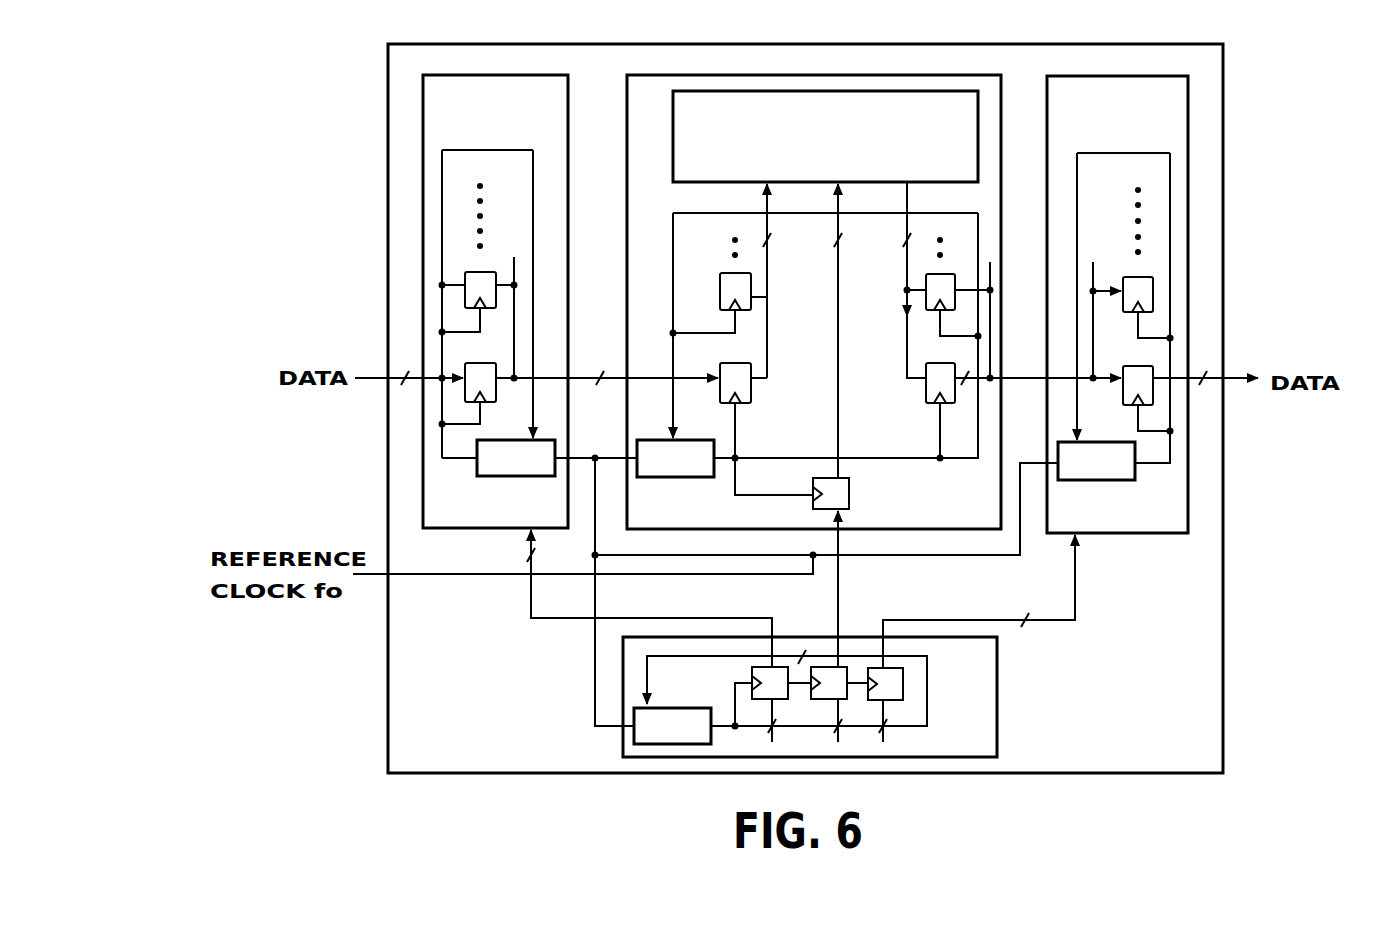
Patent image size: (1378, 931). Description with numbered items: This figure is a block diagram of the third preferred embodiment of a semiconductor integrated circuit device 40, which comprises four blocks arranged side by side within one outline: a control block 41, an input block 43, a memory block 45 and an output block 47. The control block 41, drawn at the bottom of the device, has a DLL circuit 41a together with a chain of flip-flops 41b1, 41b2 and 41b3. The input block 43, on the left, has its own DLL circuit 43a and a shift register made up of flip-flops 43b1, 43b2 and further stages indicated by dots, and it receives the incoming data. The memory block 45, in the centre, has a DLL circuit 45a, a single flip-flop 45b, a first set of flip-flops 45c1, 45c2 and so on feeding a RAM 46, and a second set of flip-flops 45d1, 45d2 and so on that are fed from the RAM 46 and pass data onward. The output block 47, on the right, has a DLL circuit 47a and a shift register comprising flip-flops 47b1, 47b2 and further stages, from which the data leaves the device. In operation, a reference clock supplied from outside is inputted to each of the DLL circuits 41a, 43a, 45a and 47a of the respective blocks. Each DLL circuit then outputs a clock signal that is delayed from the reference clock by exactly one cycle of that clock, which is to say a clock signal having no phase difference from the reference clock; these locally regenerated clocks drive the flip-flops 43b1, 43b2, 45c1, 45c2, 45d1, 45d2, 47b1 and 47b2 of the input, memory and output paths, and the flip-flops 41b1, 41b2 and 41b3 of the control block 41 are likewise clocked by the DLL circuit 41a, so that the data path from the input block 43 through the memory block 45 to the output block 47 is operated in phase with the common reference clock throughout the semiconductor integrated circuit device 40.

The semiconductor integrated circuit device 40 is at (998, 41).
The control block 41 is at (1001, 712).
The DLL circuit 41a is at (684, 707).
The flip-flop 41b1 is at (780, 670).
The flip-flop 41b2 is at (838, 670).
The flip-flop 41b3 is at (898, 672).
The input block 43 is at (520, 70).
The DLL circuit 43a is at (508, 476).
The flip-flop 43b1 is at (465, 392).
The flip-flop 43b2 is at (465, 297).
The memory block 45 is at (728, 70).
The DLL circuit 45a is at (670, 477).
The flip-flop 45b is at (851, 495).
The flip-flop 45c1 is at (748, 404).
The flip-flop 45c2 is at (751, 300).
The flip-flop 45d1 is at (928, 404).
The flip-flop 45d2 is at (930, 312).
The RAM 46 is at (878, 90).
The output block 47 is at (1130, 73).
The DLL circuit 47a is at (1103, 480).
The flip-flop 47b1 is at (1150, 400).
The flip-flop 47b2 is at (1153, 298).